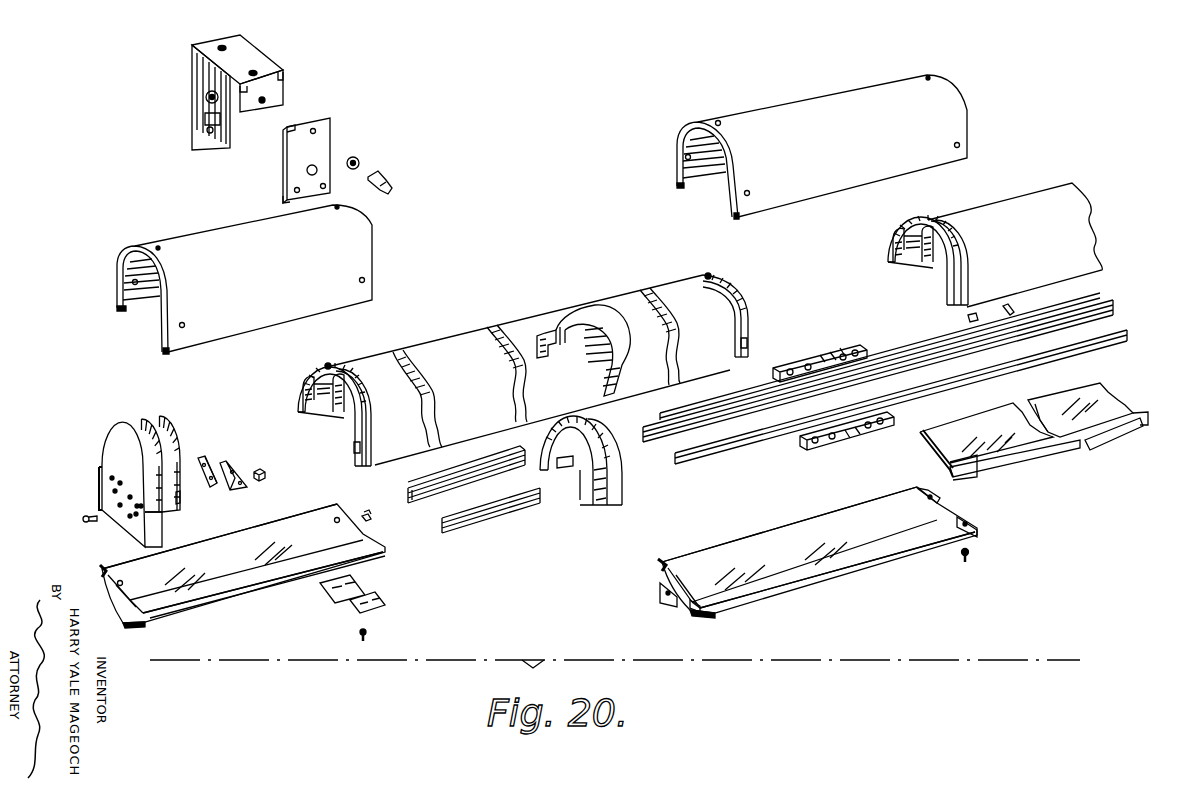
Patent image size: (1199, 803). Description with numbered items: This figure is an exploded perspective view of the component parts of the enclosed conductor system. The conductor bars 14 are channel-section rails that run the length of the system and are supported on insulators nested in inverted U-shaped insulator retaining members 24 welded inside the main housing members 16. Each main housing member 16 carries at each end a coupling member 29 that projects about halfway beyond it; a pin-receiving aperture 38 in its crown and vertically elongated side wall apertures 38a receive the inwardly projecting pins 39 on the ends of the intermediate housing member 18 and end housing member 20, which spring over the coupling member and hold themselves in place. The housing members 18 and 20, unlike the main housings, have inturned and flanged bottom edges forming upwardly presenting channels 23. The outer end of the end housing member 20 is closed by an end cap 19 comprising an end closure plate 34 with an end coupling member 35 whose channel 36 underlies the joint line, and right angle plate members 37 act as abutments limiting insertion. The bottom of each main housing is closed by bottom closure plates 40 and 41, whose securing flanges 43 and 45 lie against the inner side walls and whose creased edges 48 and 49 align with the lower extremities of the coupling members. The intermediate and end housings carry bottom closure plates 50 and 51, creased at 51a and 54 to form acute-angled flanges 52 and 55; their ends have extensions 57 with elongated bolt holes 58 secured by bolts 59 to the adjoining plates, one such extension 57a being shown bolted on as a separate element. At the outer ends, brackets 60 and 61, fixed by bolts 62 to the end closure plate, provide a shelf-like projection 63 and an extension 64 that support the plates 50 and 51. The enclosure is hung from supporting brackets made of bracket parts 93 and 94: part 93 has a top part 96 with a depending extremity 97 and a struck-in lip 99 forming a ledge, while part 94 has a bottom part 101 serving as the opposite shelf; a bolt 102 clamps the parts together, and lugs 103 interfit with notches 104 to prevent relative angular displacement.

The conductor bars 14 is at (503, 450).
The housing members 16 is at (1006, 210).
The intermediate housing member 18 is at (787, 113).
The end cap 19 is at (138, 469).
The end housing member 20 is at (205, 238).
The channels 23 is at (120, 309).
The insulator retaining members 24 is at (593, 322).
The coupling member 29 is at (352, 425).
The end closure plate 34 is at (123, 484).
The end coupling member 35 is at (163, 430).
The channel 36 is at (165, 453).
The right angle plate members 37 is at (99, 486).
The aperture 38 is at (328, 365).
The side wall apertures 38a is at (357, 453).
The pins 39 is at (133, 283).
The bottom closure plate 40 is at (983, 425).
The bottom closure plate 41 is at (1028, 455).
The securing flange 43 is at (917, 433).
The securing flange 45 is at (1100, 446).
The creased edge 48 is at (1083, 395).
The creased edge 49 is at (1142, 427).
The bottom closure plate 50 is at (234, 545).
The bottom closure plate 51 is at (218, 588).
The crease 51a is at (276, 523).
The flange 52 is at (100, 571).
The crease 54 is at (276, 578).
The flange 55 is at (148, 624).
The extensions 57 is at (660, 586).
The bolted extension 57a is at (348, 585).
The bolt hole 58 is at (937, 505).
The bolt 59 is at (972, 553).
The bracket 60 is at (206, 486).
The bracket 61 is at (231, 491).
The bolts 62 is at (84, 520).
The shelf-like projection 63 is at (208, 480).
The extension 64 is at (263, 470).
The bracket part 93 is at (200, 85).
The bracket part 94 is at (320, 150).
The top part 96 is at (243, 57).
The depending extremity 97 is at (262, 103).
The struck-in lip 99 is at (210, 123).
The bottom part 101 is at (284, 194).
The bolt 102 is at (384, 166).
The lugs 103 is at (290, 133).
The notches 104 is at (282, 92).